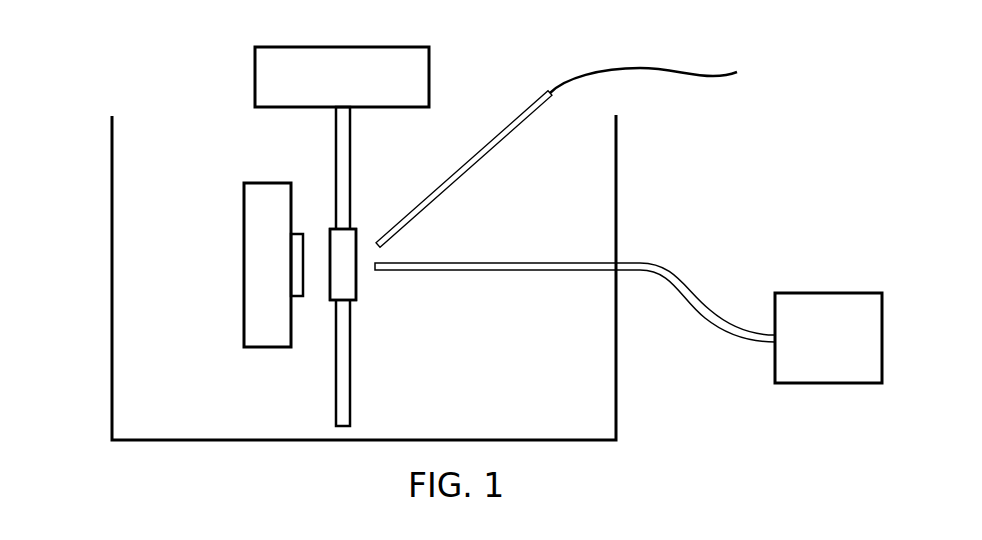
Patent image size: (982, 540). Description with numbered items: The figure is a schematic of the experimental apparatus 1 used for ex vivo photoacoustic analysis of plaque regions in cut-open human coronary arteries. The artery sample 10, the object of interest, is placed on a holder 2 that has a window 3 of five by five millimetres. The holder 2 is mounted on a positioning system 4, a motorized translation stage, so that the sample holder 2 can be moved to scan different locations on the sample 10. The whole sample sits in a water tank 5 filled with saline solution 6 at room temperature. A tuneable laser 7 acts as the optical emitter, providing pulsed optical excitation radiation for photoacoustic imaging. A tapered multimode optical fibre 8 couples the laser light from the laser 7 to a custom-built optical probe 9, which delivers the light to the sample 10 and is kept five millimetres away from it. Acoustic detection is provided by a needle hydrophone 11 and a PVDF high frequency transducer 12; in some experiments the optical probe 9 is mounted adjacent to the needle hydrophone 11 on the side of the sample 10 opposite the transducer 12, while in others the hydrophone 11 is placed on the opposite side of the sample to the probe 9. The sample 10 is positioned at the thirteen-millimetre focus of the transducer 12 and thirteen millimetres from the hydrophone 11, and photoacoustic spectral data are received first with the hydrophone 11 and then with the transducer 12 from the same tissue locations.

The apparatus 1 is at (87, 85).
The holder 2 is at (352, 163).
The window 3 is at (354, 303).
The positioning system 4 is at (340, 47).
The water tank 5 is at (616, 390).
The saline solution 6 is at (526, 410).
The tuneable laser 7 is at (830, 293).
The tapered multimode optical fibre 8 is at (693, 280).
The optical probe 9 is at (538, 263).
The sample 10 is at (357, 268).
The needle hydrophone 11 is at (488, 153).
The PVDF high frequency transducer 12 is at (303, 298).